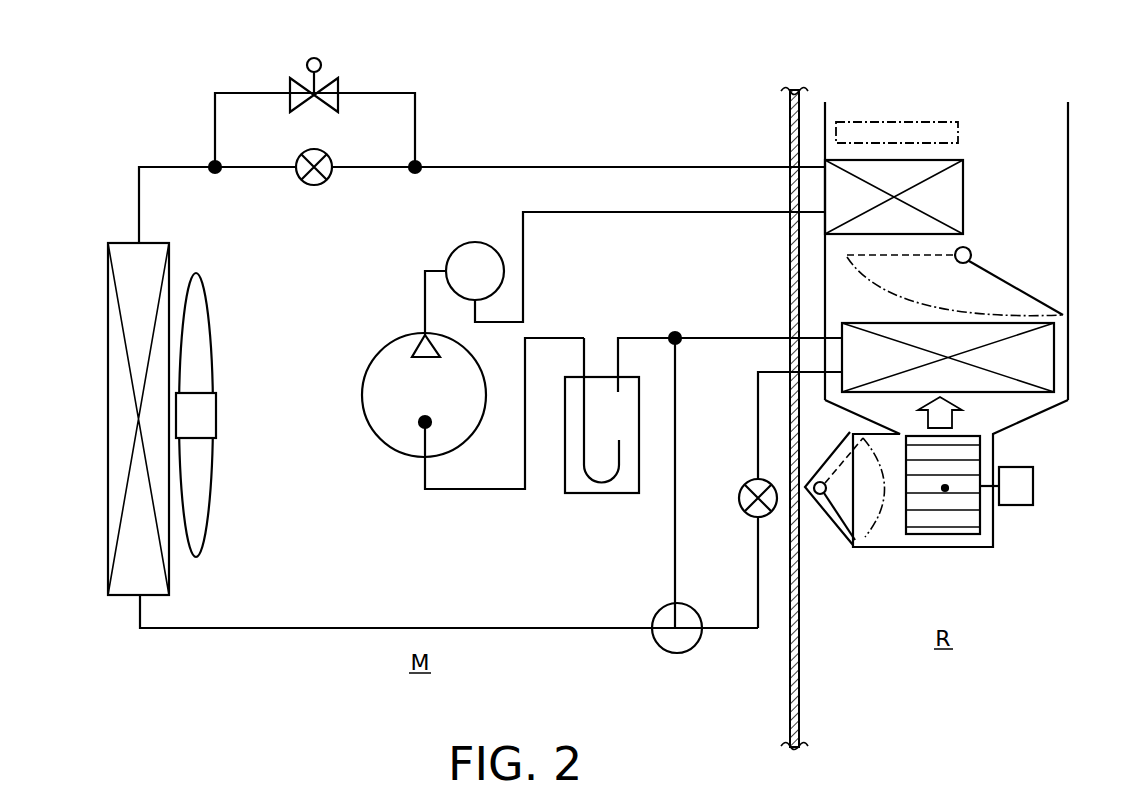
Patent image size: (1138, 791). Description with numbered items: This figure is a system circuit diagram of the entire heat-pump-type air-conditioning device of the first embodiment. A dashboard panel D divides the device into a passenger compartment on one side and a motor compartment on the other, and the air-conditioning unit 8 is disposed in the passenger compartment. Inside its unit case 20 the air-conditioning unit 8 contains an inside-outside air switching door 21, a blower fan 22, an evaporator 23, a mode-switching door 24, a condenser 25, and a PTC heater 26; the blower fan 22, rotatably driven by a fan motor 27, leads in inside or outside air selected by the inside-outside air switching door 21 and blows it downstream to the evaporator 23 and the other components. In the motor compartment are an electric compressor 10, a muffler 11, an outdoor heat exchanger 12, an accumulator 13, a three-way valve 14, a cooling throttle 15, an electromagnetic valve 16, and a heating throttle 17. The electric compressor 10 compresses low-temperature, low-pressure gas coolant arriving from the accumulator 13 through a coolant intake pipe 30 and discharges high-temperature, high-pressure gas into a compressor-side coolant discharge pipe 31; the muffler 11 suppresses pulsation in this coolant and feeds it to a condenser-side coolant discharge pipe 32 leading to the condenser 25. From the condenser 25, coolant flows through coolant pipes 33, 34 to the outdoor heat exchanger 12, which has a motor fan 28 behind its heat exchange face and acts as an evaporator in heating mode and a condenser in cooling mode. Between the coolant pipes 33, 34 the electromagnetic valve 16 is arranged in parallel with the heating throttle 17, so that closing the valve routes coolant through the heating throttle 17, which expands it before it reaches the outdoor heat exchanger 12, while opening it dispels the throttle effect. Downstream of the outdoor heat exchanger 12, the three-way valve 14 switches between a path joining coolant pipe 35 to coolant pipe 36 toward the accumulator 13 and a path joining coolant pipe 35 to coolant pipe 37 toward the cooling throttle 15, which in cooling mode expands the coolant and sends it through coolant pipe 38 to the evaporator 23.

The air-conditioning unit 8 is at (1060, 420).
The electric compressor 10 is at (378, 350).
The muffler 11 is at (461, 246).
The outdoor heat exchanger 12 is at (162, 243).
The accumulator 13 is at (598, 494).
The three-way valve 14 is at (677, 653).
The cooling throttle 15 is at (740, 500).
The electromagnetic valve 16 is at (343, 90).
The heating throttle 17 is at (326, 155).
The unit case 20 is at (1070, 242).
The inside-outside air switching door 21 is at (846, 507).
The blower fan 22 is at (945, 492).
The evaporator 23 is at (1037, 360).
The mode-switching door 24 is at (1017, 285).
The condenser 25 is at (965, 195).
The PTC heater 26 is at (960, 120).
The fan motor 27 is at (1013, 507).
The motor fan 28 is at (200, 275).
The coolant intake pipe 30 is at (478, 491).
The compressor-side coolant discharge pipe 31 is at (423, 302).
The condenser-side coolant discharge pipe 32 is at (638, 215).
The coolant pipe 33 is at (577, 166).
The coolant pipe 34 is at (160, 166).
The coolant pipe 35 is at (517, 626).
The coolant pipe 36 is at (676, 545).
The coolant pipe 37 is at (757, 600).
The coolant pipe 38 is at (757, 408).
The dashboard panel D is at (803, 655).